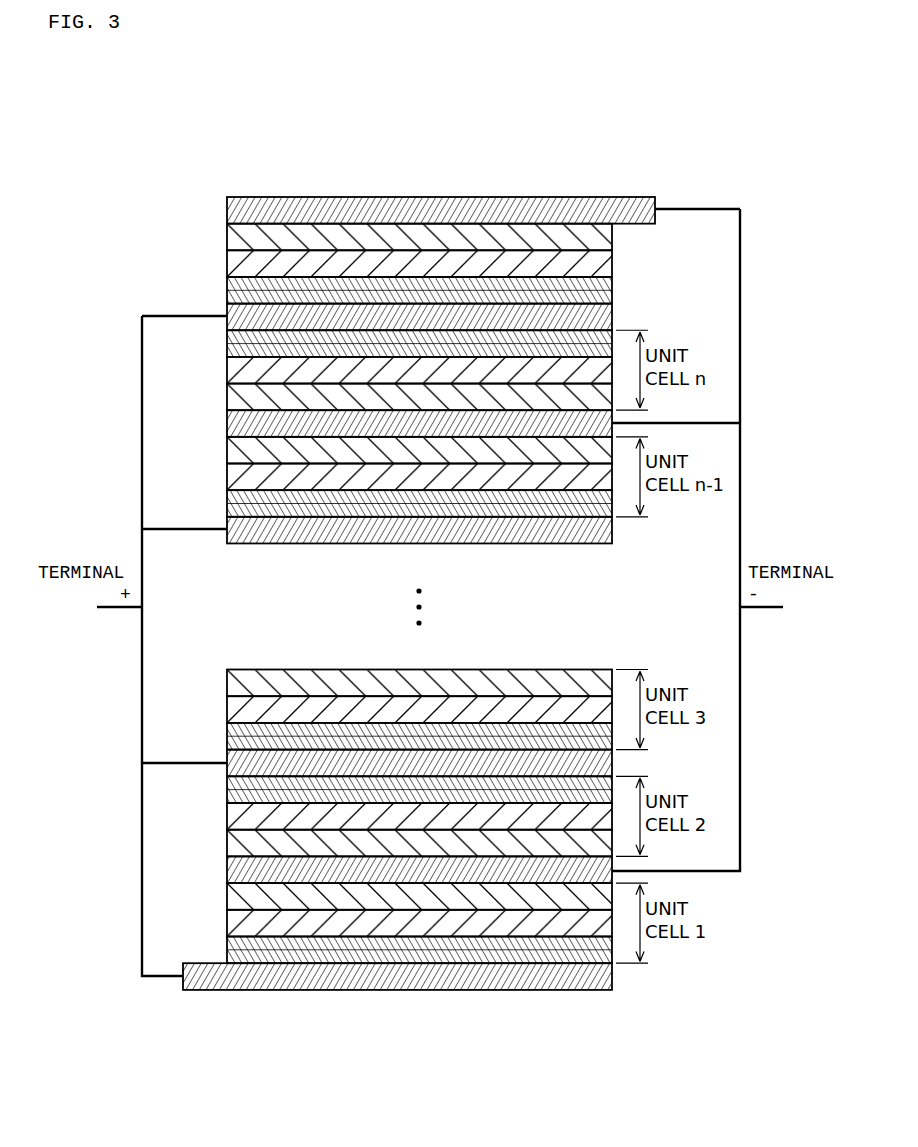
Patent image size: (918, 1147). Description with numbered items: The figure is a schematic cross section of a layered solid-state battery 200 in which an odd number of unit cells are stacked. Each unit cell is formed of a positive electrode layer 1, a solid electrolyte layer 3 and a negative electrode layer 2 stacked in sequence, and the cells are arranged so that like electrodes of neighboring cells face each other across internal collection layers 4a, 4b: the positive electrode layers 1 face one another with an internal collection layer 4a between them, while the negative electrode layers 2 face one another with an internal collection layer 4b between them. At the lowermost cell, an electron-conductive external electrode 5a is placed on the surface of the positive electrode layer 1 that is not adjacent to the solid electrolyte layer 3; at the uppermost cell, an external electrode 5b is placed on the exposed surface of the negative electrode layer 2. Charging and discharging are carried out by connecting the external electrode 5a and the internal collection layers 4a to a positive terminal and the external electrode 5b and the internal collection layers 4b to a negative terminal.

The layered solid-state battery 200 is at (524, 169).
The positive electrode layer 1 is at (238, 290).
The negative electrode layer 2 is at (238, 237).
The solid electrolyte layer 3 is at (238, 264).
The internal collection layer 4a is at (245, 314).
The internal collection layer 4b is at (230, 424).
The external electrode 5a is at (243, 979).
The external electrode 5b is at (240, 208).